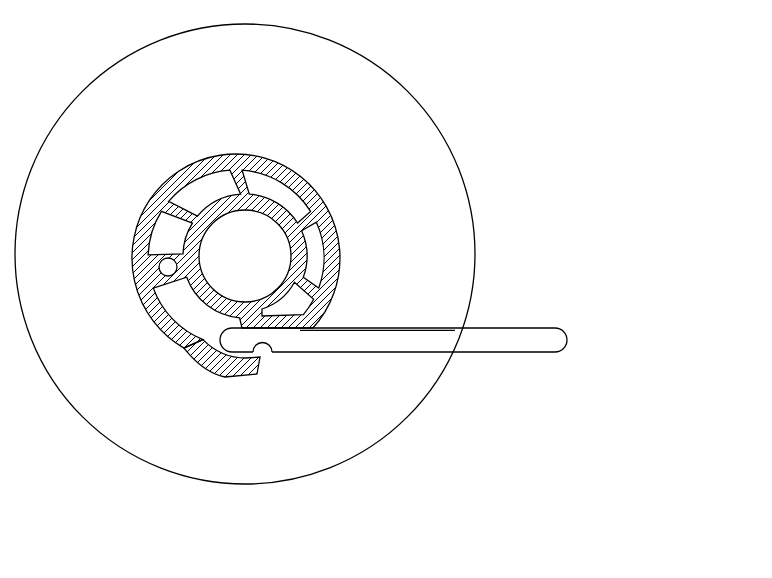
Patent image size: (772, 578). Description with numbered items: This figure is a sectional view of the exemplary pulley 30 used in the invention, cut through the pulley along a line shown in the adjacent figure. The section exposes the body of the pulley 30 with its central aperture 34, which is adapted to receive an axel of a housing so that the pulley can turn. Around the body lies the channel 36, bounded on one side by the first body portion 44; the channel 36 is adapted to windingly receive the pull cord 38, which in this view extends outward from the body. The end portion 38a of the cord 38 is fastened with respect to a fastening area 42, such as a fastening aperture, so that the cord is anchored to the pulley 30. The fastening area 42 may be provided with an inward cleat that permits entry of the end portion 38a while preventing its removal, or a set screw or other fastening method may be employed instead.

The pulley 30 is at (518, 88).
The central aperture 34 is at (292, 252).
The channel 36 is at (390, 104).
The pull cord 38 is at (521, 328).
The end portion 38a is at (198, 357).
The fastening area 42 is at (269, 354).
The first body portion 44 is at (467, 166).